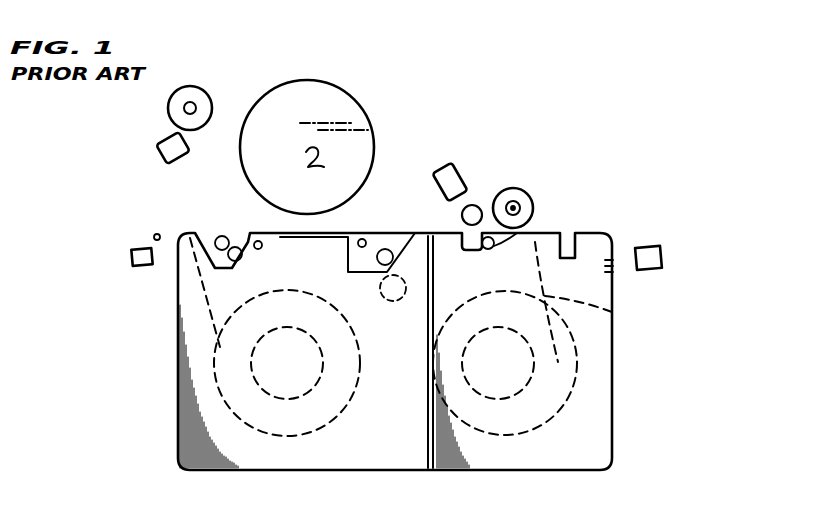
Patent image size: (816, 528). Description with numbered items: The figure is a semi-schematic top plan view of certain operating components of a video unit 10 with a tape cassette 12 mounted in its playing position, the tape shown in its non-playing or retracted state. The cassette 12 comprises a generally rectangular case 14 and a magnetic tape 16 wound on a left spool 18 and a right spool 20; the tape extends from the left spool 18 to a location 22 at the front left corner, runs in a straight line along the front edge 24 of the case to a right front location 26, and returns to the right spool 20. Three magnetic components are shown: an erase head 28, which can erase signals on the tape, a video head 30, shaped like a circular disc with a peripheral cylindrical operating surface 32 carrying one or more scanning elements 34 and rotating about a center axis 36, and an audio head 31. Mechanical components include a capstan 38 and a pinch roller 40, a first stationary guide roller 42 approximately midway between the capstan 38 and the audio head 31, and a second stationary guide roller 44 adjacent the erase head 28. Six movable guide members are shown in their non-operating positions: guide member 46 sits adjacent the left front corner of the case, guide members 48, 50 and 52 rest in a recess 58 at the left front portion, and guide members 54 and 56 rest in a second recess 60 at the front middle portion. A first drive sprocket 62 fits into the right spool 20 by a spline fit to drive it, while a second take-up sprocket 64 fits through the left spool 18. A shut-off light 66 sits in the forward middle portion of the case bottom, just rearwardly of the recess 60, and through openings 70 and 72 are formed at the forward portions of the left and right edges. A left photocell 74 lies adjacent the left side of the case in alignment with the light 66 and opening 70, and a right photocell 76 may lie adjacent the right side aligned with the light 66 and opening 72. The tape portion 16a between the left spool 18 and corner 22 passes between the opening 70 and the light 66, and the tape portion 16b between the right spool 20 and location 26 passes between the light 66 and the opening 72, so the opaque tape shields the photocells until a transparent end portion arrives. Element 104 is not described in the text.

The video unit 10 is at (478, 88).
The tape cassette 12 is at (407, 304).
The case 14 is at (517, 462).
The magnetic tape 16 is at (383, 233).
The tape portion 16a is at (205, 302).
The tape portion 16b is at (614, 312).
The left spool 18 is at (317, 427).
The right spool 20 is at (520, 432).
The front left corner location 22 is at (194, 232).
The front edge 24 is at (320, 233).
The right front location 26 is at (528, 234).
The erase head 28 is at (162, 148).
The video head 30 is at (308, 93).
The audio head 31 is at (455, 180).
The peripheral operating surface 32 is at (357, 107).
The scanning elements 34 is at (334, 90).
The center axis 36 is at (332, 162).
The capstan 38 is at (478, 240).
The pinch roller 40 is at (535, 202).
The first stationary guide roller 42 is at (480, 206).
The second stationary guide roller 44 is at (175, 108).
The guide member 46 is at (154, 235).
The guide member 48 is at (220, 236).
The guide member 50 is at (237, 247).
The guide member 52 is at (262, 247).
The guide member 54 is at (359, 246).
The guide member 56 is at (378, 262).
The recess 58 is at (250, 233).
The second recess 60 is at (362, 236).
The first drive sprocket 62 is at (612, 387).
The second take-up sprocket 64 is at (320, 380).
The shut-off light 66 is at (449, 291).
The left opening 70 is at (175, 265).
The right opening 72 is at (612, 262).
The left photocell 74 is at (132, 257).
The right photocell 76 is at (660, 264).
The tape guide roller 104 is at (393, 301).